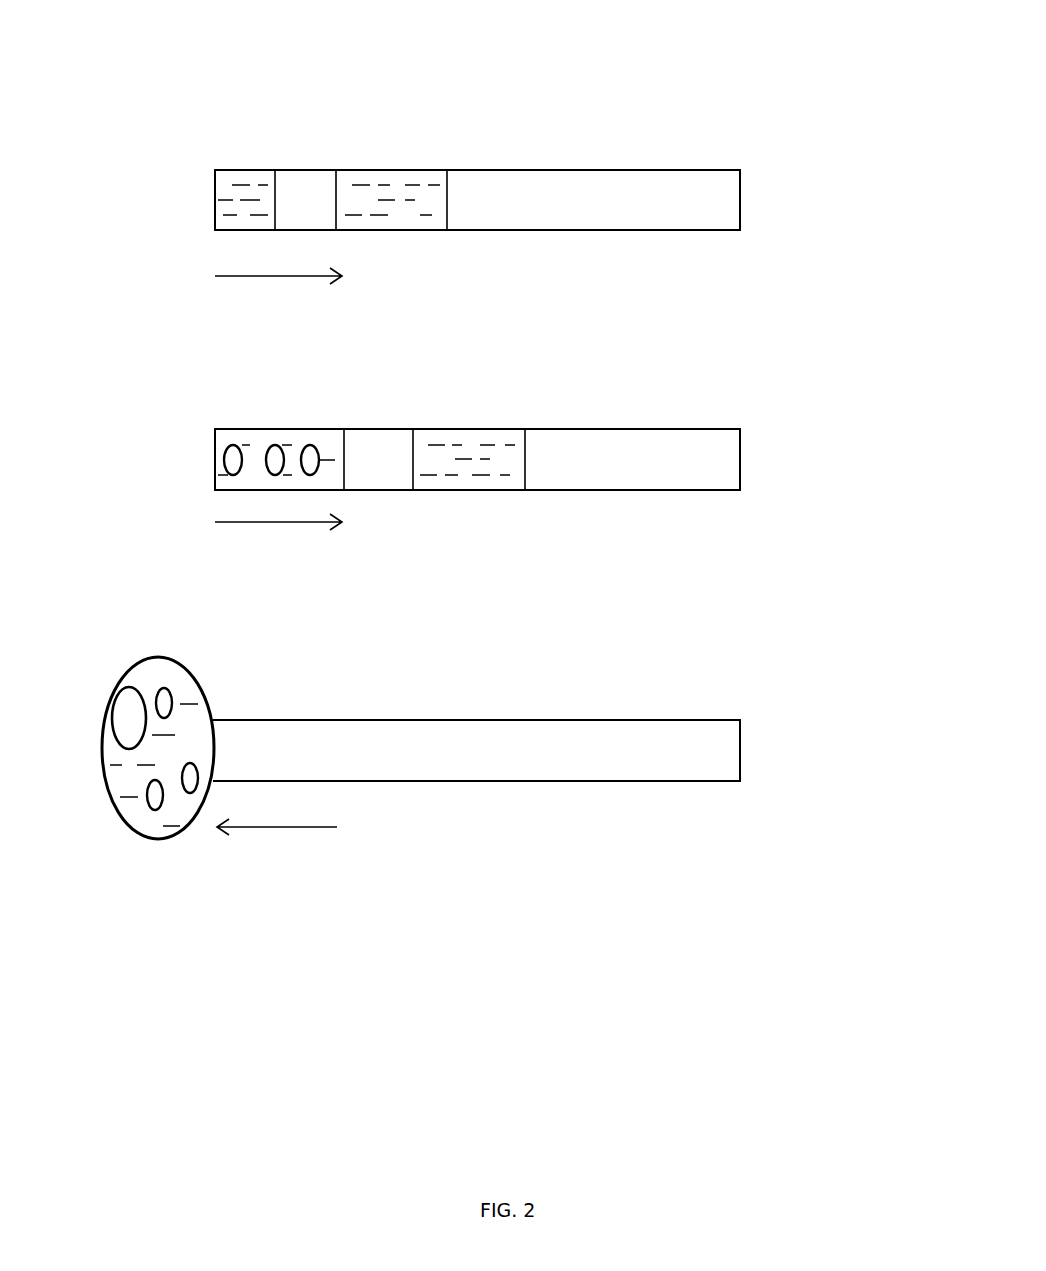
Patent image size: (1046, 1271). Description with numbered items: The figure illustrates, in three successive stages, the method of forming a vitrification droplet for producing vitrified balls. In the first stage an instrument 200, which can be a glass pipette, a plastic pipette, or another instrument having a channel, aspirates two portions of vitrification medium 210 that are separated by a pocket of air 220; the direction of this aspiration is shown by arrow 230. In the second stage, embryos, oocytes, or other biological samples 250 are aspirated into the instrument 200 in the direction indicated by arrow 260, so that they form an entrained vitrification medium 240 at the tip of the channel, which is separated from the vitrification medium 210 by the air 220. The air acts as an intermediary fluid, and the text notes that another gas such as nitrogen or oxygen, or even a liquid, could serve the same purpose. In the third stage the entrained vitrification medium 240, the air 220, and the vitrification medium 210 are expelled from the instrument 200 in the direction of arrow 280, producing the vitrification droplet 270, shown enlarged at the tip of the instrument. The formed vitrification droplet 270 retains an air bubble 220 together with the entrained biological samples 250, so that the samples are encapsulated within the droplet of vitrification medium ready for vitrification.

The instrument 200 is at (610, 187).
The vitrification medium 210 is at (387, 200).
The air 220 is at (312, 207).
The arrow 230 is at (278, 296).
The entrained vitrification medium 240 is at (250, 458).
The biological samples 250 is at (222, 451).
The arrow 260 is at (278, 549).
The vitrification droplet 270 is at (105, 748).
The arrow 280 is at (277, 845).